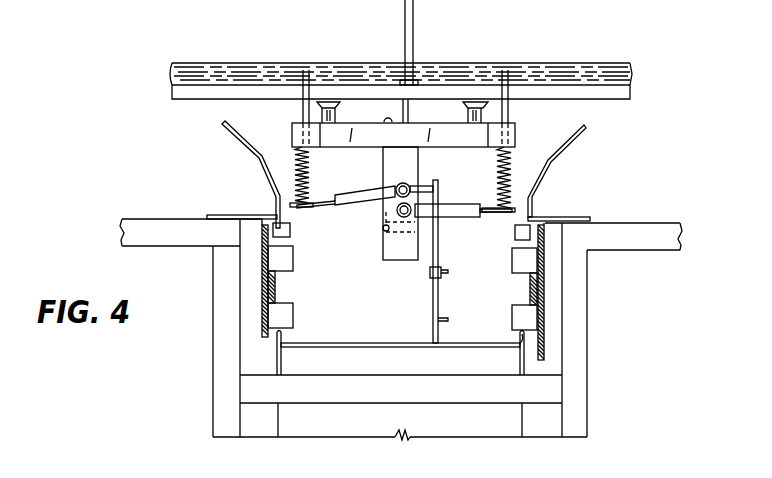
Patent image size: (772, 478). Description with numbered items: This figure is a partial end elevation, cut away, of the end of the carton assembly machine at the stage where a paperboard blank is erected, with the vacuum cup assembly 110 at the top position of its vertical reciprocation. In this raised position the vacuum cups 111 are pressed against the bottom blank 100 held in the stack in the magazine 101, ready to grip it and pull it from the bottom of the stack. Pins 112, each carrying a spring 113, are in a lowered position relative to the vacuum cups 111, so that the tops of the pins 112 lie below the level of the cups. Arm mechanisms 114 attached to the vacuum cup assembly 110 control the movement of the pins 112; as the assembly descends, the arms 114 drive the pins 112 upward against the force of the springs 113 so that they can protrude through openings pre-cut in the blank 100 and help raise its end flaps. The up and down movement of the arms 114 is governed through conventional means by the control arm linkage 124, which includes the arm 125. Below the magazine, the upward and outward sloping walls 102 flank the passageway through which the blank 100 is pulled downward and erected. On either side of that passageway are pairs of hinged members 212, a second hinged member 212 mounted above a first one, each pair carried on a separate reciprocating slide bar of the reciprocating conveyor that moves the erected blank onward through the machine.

The blank 100 is at (211, 60).
The magazine 101 is at (188, 92).
The upward and outward sloping walls 102 is at (238, 141).
The vacuum cup assembly 110 is at (533, 140).
The vacuum cups 111 is at (342, 106).
The pins 112 is at (300, 112).
The springs 113 is at (308, 183).
The arm mechanisms 114 is at (320, 207).
The control arm linkage 124 is at (424, 296).
The arm 125 is at (440, 258).
The hinged members 212 is at (290, 312).